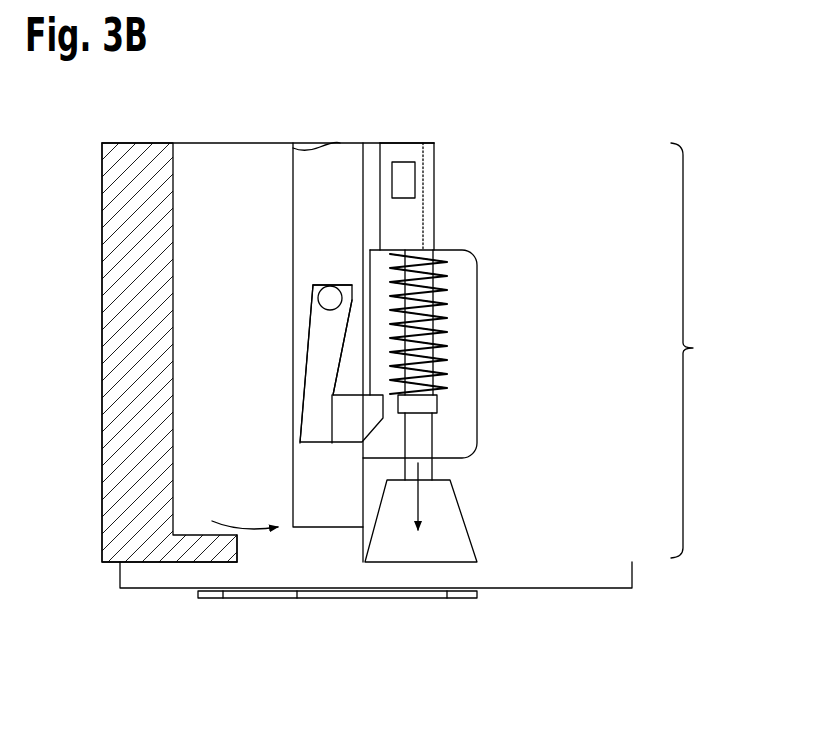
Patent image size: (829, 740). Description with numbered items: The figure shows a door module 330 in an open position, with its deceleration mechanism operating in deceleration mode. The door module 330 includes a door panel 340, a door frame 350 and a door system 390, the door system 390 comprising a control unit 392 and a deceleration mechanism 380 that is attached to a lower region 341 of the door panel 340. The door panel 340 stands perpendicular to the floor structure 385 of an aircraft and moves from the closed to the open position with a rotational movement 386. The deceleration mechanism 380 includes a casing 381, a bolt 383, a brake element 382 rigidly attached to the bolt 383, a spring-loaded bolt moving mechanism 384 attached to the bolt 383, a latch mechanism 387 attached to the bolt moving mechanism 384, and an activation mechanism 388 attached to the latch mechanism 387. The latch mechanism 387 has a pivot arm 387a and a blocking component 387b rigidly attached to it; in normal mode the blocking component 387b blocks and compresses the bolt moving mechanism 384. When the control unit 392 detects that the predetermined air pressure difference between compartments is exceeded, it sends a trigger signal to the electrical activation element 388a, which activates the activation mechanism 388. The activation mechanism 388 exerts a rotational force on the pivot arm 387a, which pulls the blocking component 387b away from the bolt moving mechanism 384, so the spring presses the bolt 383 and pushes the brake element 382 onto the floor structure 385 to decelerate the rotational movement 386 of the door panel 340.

The door module 330 is at (188, 121).
The door panel 340 is at (320, 185).
The lower region 341 is at (708, 350).
The door frame 350 is at (150, 212).
The deceleration mechanism 380 is at (538, 215).
The casing 381 is at (462, 323).
The brake element 382 is at (462, 503).
The bolt 383 is at (462, 427).
The bolt moving mechanism 384 is at (462, 378).
The floor structure 385 is at (614, 573).
The rotational movement 386 is at (250, 530).
The latch mechanism 387 is at (275, 348).
The pivot arm 387a is at (316, 371).
The blocking component 387b is at (350, 424).
The activation mechanism 388 is at (330, 275).
The activation element 388a is at (322, 296).
The door system 390 is at (527, 135).
The control unit 392 is at (406, 183).